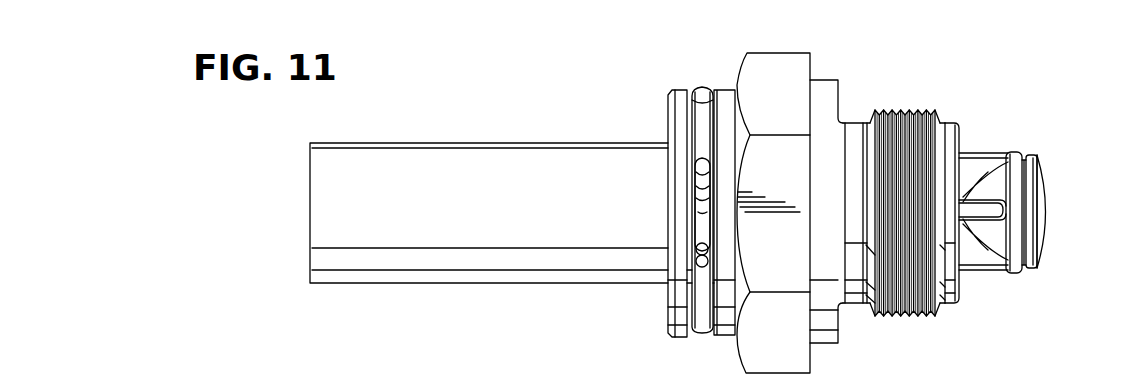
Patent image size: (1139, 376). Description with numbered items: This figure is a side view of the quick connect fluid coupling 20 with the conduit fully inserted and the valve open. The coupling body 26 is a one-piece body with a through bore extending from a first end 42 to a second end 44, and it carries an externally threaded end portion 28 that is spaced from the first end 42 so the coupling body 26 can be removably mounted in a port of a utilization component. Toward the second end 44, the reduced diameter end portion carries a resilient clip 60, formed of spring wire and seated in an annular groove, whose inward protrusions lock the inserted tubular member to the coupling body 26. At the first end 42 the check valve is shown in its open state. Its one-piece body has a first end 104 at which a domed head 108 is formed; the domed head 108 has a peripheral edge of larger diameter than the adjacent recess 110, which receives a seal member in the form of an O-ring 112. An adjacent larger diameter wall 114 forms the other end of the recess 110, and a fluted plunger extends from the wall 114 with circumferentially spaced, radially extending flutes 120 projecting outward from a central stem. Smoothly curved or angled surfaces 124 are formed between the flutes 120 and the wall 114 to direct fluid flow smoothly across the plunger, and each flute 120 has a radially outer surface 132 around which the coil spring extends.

The quick connect fluid coupling 20 is at (590, 104).
The coupling body 26 is at (725, 48).
The externally threaded end portion 28 is at (912, 108).
The first end 42 is at (968, 140).
The second end 44 is at (668, 313).
The resilient clip 60 is at (700, 88).
The first end 104 is at (1048, 234).
The domed head 108 is at (1043, 213).
The recess 110 is at (1036, 156).
The O-ring 112 is at (1023, 157).
The larger diameter wall 114 is at (1012, 154).
The flutes 120 is at (971, 168).
The curved or angled surfaces 124 is at (1010, 158).
The radially outer surface 132 is at (979, 271).